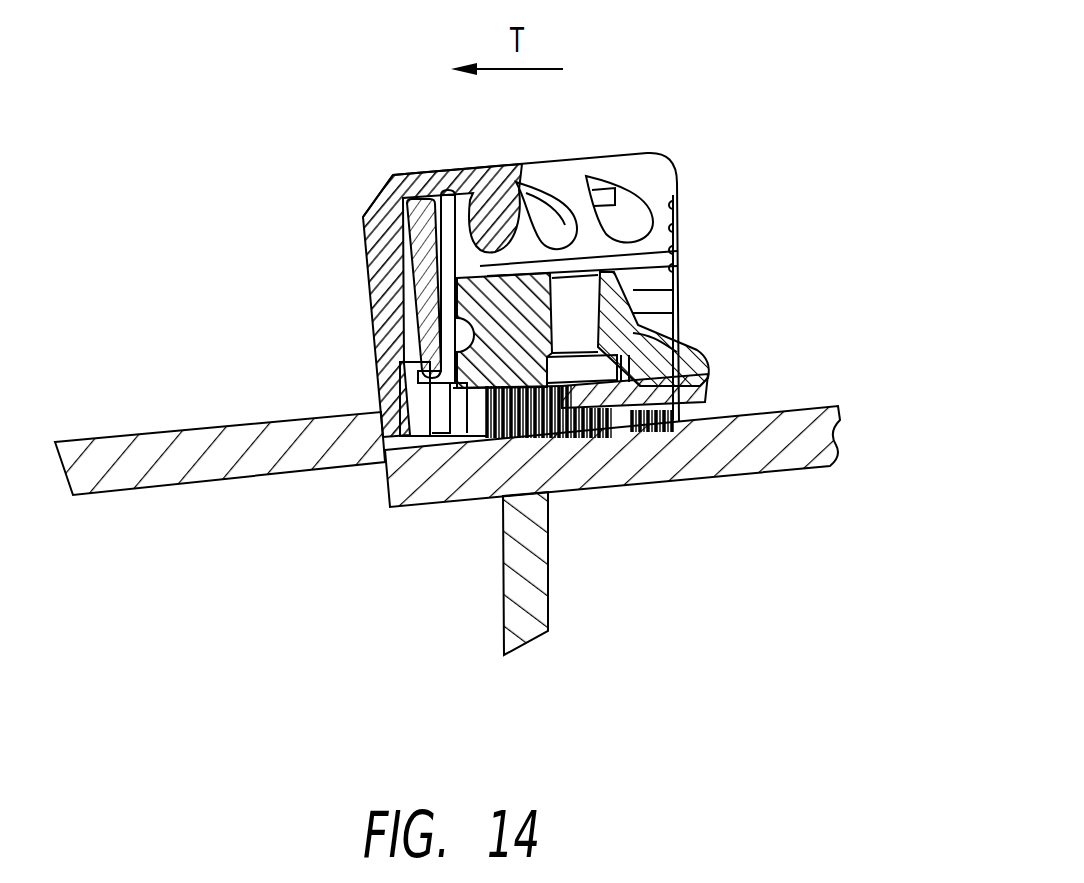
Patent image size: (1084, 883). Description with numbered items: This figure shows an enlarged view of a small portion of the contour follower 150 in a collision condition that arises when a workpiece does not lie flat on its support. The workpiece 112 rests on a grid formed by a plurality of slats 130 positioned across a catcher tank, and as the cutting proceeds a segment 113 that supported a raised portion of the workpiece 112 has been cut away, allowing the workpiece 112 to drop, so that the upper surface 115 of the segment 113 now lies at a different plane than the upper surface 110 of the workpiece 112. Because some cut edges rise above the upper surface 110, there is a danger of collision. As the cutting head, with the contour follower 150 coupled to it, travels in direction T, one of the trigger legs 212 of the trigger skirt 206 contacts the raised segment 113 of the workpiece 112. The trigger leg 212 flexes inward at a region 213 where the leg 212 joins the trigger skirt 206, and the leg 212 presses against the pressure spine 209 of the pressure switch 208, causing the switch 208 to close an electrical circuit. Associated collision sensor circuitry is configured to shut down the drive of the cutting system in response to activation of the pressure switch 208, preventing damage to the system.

The contour follower 150 is at (736, 128).
The trigger skirt 206 is at (568, 177).
The pressure switch 208 is at (414, 176).
The pressure spine 209 is at (402, 285).
The skirt leg 212 is at (381, 323).
The region 213 is at (383, 192).
The upper surface 110 is at (741, 410).
The workpiece 112 is at (775, 430).
The segment 113 is at (198, 465).
The upper surface 115 is at (213, 420).
The slat 130 is at (539, 573).